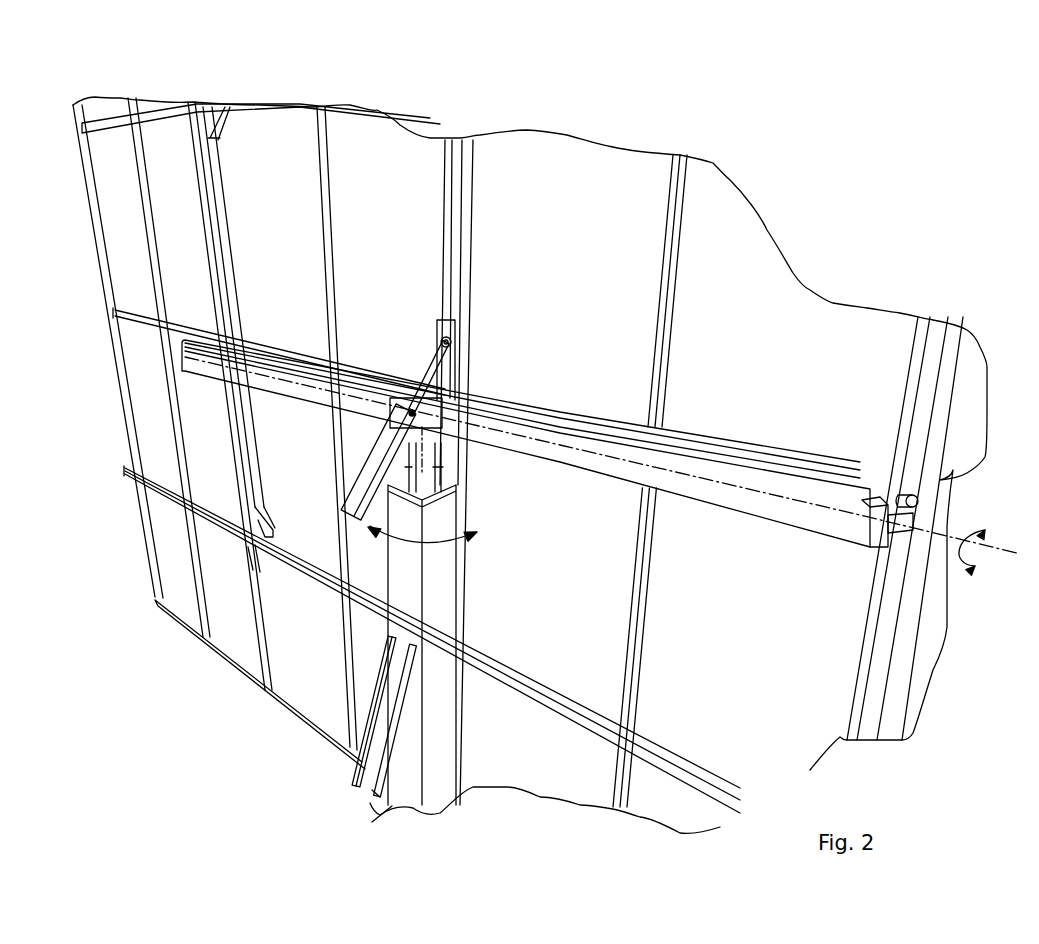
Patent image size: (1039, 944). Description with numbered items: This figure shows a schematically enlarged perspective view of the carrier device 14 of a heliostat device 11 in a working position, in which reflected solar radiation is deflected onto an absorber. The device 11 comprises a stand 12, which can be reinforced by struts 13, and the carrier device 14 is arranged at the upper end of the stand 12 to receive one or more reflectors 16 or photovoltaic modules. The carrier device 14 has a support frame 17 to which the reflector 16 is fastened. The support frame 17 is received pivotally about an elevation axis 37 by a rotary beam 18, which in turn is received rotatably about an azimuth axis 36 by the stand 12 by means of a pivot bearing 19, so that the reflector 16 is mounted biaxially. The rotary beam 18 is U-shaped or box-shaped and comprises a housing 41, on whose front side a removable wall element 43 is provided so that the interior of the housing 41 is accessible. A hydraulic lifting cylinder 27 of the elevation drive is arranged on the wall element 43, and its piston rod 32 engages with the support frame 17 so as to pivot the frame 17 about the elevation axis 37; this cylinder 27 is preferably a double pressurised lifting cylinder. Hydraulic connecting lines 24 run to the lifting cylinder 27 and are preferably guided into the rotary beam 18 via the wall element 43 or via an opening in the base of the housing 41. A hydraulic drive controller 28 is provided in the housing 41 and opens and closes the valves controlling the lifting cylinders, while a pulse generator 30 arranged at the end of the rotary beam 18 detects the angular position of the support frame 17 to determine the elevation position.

The device 11 is at (135, 728).
The stand 12 is at (437, 793).
The struts 13 is at (373, 789).
The carrier device 14 is at (110, 515).
The reflector 16 is at (808, 317).
The support frame 17 is at (205, 545).
The rotary beam 18 is at (598, 458).
The pivot bearing 19 is at (395, 447).
The connecting lines 24 is at (378, 478).
The hydraulic lifting cylinder 27 is at (372, 467).
The hydraulic drive controller 28 is at (368, 813).
The pulse generator 30 is at (918, 502).
The piston rod 32 is at (422, 367).
The azimuth axis 36 is at (426, 460).
The elevation axis 37 is at (990, 567).
The housing 41 is at (715, 445).
The wall element 43 is at (468, 392).